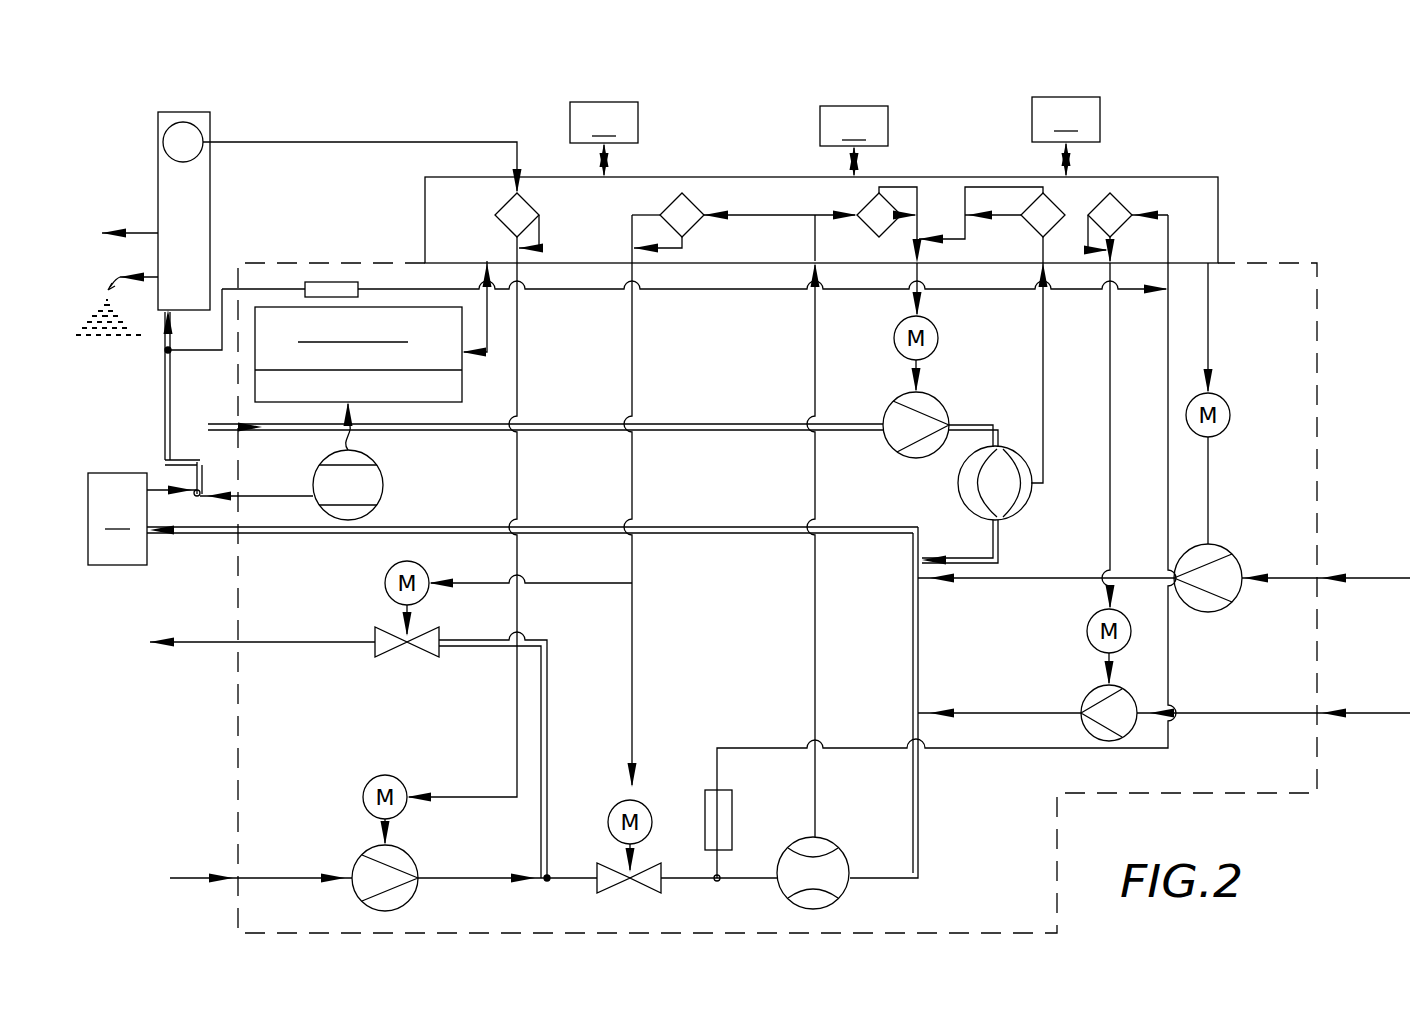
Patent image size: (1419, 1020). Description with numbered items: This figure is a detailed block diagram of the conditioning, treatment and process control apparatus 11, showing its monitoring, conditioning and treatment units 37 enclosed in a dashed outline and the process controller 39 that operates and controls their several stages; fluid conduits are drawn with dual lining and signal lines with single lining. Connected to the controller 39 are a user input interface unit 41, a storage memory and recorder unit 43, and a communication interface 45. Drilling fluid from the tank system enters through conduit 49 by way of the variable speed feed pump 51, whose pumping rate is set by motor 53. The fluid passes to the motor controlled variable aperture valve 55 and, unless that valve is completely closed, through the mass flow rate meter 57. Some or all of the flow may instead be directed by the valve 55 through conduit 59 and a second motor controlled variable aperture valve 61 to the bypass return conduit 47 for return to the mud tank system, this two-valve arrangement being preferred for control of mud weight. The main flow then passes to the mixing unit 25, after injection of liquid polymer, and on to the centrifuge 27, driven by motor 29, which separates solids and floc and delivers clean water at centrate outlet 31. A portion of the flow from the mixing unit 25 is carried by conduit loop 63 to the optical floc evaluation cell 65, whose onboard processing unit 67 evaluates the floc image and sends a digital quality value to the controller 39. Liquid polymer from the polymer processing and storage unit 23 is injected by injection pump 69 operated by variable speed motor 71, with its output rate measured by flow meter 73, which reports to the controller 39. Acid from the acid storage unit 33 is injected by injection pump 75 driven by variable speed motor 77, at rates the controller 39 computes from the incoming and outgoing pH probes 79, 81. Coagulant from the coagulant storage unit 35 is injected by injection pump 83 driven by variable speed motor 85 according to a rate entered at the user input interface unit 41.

The conditioning, treatment and process control apparatus 11 is at (1248, 194).
The polymer processing and storage unit 23 is at (527, 413).
The mixing unit 25 is at (503, 519).
The centrifuge 27 is at (200, 210).
The motor 29 is at (196, 127).
The centrate outlet 31 is at (145, 226).
The acid storage unit 33 is at (1164, 698).
The coagulant storage unit 35 is at (1164, 562).
The monitoring, conditioning and treatment units 37 is at (1292, 308).
The process controller 39 is at (1170, 177).
The user input interface unit 41 is at (604, 139).
The storage memory and recorder unit 43 is at (854, 141).
The communication interface 45 is at (1066, 137).
The bypass return conduit 47 is at (212, 645).
The conduit 49 is at (200, 870).
The variable speed feed pump 51 is at (410, 852).
The motor 53 is at (367, 776).
The motor controlled variable aperture valve 55 is at (645, 805).
The mass flow rate meter 57 is at (846, 855).
The conduit 59 is at (547, 702).
The motor controlled variable aperture valve 61 is at (385, 656).
The conduit loop 63 is at (247, 494).
The optical floc evaluation cell 65 is at (367, 482).
The onboard processing unit 67 is at (462, 385).
The injection pump 69 is at (947, 405).
The variable speed motor 71 is at (938, 338).
The flow meter 73 is at (1020, 506).
The injection pump 75 is at (1085, 700).
The variable speed motor 77 is at (1087, 625).
The incoming pH probe 79 is at (718, 820).
The outgoing pH probe 81 is at (328, 282).
The injection pump 83 is at (1222, 556).
The variable speed motor 85 is at (1230, 412).